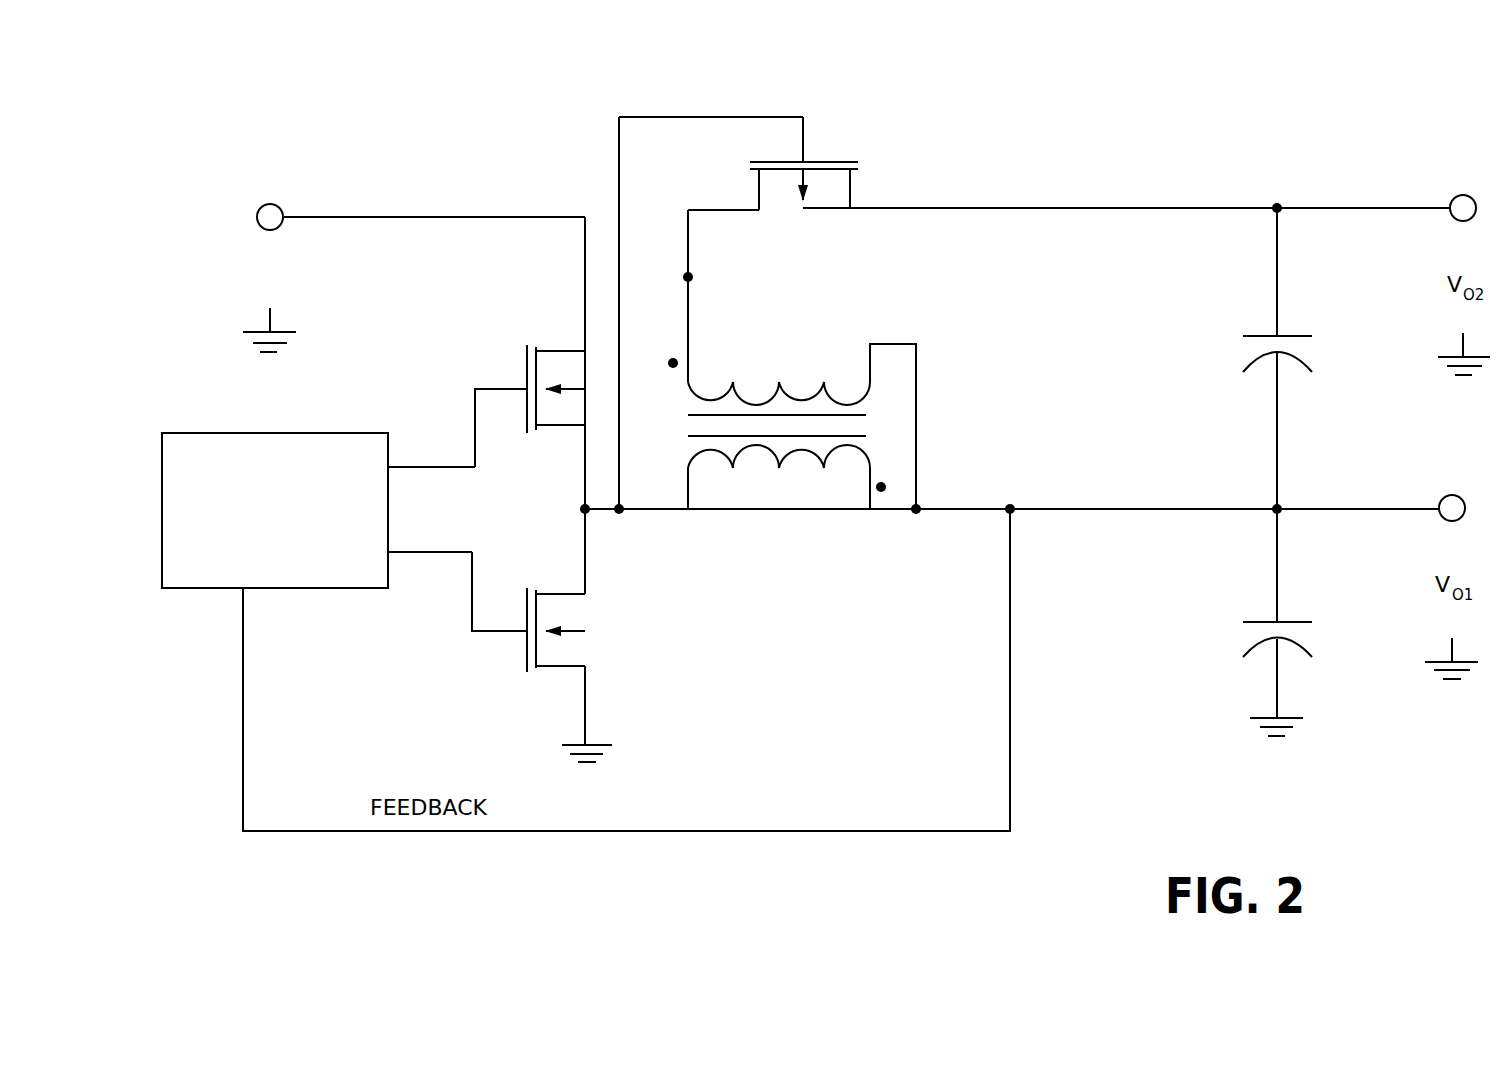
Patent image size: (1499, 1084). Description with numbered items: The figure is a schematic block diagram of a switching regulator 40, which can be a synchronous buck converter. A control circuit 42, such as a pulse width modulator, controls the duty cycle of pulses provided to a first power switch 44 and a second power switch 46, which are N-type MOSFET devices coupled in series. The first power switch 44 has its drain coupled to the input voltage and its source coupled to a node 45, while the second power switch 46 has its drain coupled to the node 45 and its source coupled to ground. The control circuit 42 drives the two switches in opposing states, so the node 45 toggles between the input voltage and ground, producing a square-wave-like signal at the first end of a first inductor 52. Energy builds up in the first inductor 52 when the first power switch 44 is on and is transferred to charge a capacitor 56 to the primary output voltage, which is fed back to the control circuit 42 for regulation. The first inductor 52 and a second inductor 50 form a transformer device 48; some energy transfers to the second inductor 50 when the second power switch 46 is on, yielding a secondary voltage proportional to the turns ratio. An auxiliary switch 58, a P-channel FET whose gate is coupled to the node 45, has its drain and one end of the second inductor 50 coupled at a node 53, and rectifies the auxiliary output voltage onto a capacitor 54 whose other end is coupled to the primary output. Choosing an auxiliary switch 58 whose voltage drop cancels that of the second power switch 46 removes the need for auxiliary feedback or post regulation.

The switching regulator 40 is at (262, 142).
The control circuit 42 is at (297, 433).
The first power switch 44 is at (480, 312).
The node 45 is at (606, 528).
The second power switch 46 is at (462, 670).
The transformer device 48 is at (824, 318).
The second inductor 50 is at (804, 428).
The first inductor 52 is at (802, 487).
The node 53 is at (708, 270).
The capacitor 54 is at (1174, 328).
The capacitor 56 is at (1214, 612).
The auxiliary switch 58 is at (886, 120).